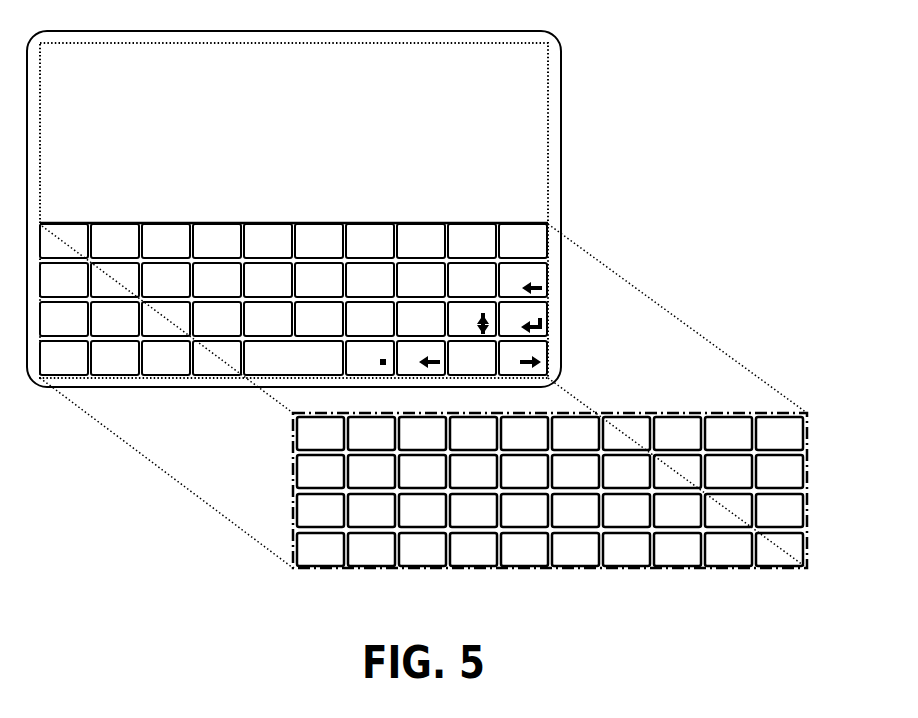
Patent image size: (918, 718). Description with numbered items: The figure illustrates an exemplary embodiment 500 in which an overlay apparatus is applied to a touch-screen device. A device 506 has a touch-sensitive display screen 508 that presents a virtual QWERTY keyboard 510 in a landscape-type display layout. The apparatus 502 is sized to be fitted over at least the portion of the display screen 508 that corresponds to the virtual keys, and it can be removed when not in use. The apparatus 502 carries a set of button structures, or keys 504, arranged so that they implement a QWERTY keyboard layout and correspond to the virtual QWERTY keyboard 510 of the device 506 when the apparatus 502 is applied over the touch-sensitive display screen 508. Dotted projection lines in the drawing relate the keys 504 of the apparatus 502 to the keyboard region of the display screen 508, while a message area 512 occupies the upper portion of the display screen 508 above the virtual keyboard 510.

The exemplary embodiment 500 is at (774, 44).
The apparatus 502 is at (690, 412).
The button structures 504 is at (778, 472).
The device 506 is at (561, 88).
The touch-sensitive display screen 508 is at (548, 147).
The virtual QWERTY keyboard 510 is at (537, 230).
The message area 512 is at (294, 173).